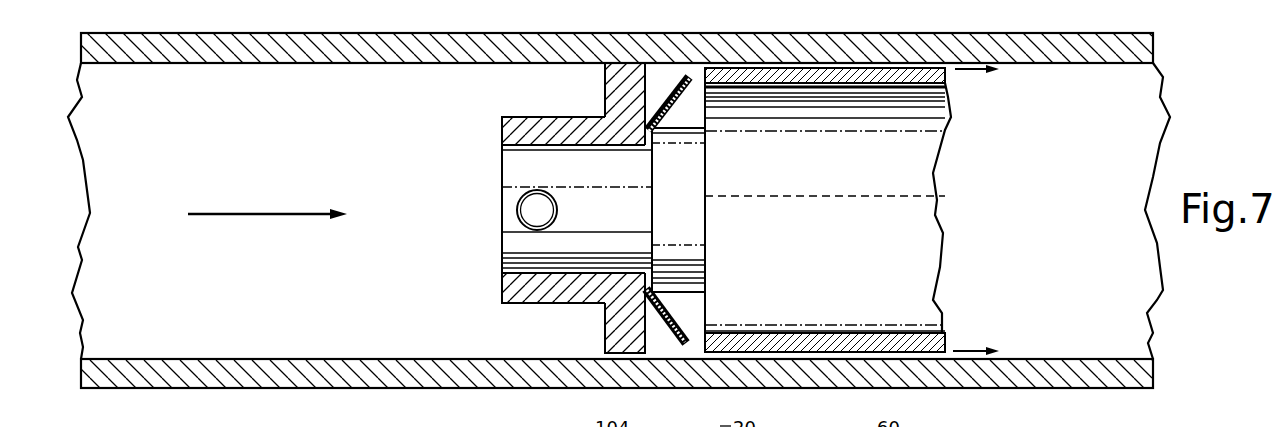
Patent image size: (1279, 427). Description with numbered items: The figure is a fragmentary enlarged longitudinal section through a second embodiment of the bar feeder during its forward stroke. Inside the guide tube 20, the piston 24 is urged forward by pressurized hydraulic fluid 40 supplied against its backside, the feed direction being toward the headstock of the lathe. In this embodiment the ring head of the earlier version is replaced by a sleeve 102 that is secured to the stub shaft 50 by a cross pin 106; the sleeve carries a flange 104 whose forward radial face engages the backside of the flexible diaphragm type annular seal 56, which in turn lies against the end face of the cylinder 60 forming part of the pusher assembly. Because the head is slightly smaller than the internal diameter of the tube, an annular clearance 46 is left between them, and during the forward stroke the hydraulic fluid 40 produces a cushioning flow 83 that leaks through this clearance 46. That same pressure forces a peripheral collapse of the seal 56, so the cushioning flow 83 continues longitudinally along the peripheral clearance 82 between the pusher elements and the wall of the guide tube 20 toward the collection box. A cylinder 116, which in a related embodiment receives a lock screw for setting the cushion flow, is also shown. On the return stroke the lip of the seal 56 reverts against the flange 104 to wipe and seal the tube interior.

The guide tube 20 is at (689, 38).
The piston 24 is at (556, 82).
The hydraulic fluid 40 is at (292, 212).
The annular clearance 46 is at (605, 355).
The stub shaft 50 is at (517, 163).
The annular seal 56 is at (670, 333).
The cylinder 60 is at (843, 70).
The peripheral clearance 82 is at (880, 357).
The cushioning flow 83 is at (968, 350).
The sleeve 102 is at (513, 128).
The flange 104 is at (621, 82).
The cross pin 106 is at (530, 213).
The cylinder 116 is at (525, 318).